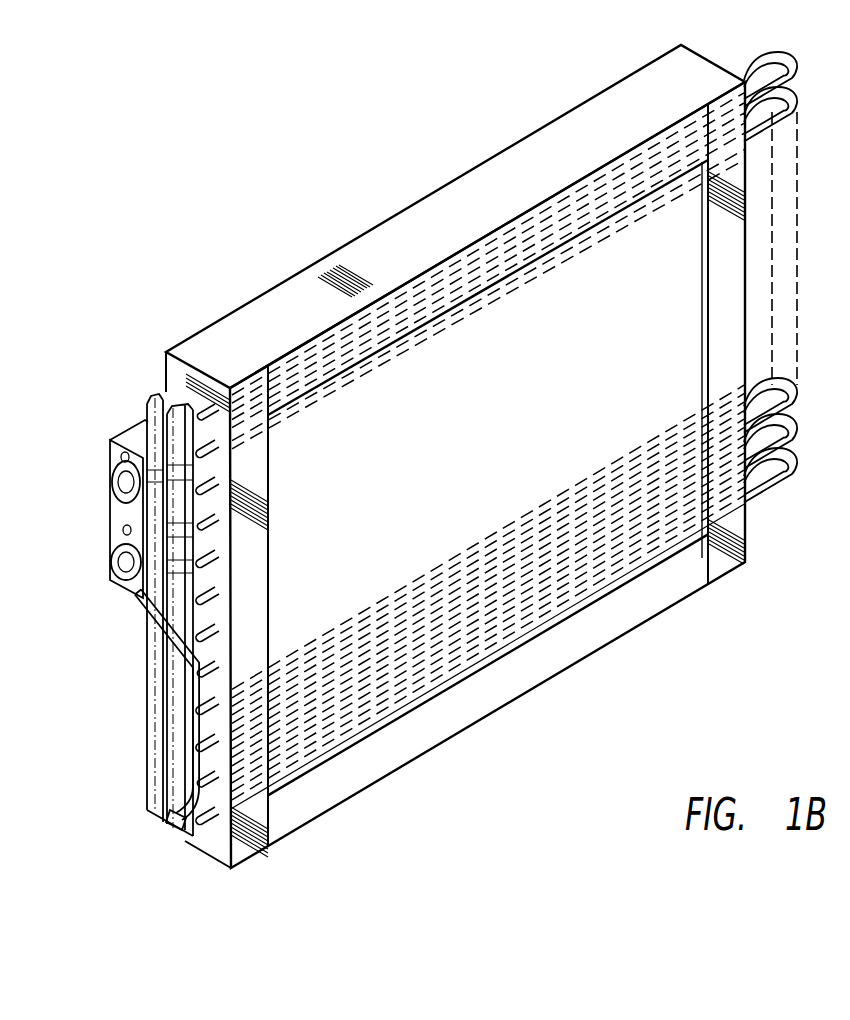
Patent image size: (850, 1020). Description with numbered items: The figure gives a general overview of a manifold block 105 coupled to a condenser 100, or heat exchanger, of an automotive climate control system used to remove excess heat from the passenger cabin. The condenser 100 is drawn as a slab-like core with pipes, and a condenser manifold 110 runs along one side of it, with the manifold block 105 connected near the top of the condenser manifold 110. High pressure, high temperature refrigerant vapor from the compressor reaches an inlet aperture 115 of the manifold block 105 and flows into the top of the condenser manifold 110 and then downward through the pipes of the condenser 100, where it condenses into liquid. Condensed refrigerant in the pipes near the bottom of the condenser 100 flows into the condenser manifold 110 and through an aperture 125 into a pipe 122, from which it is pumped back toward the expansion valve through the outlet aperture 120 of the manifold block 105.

The condenser 100 is at (632, 633).
The manifold block 105 is at (122, 596).
The condenser manifold 110 is at (153, 828).
The inlet aperture 115 is at (107, 500).
The outlet aperture 120 is at (105, 574).
The pipe 122 is at (193, 733).
The aperture 125 is at (165, 828).